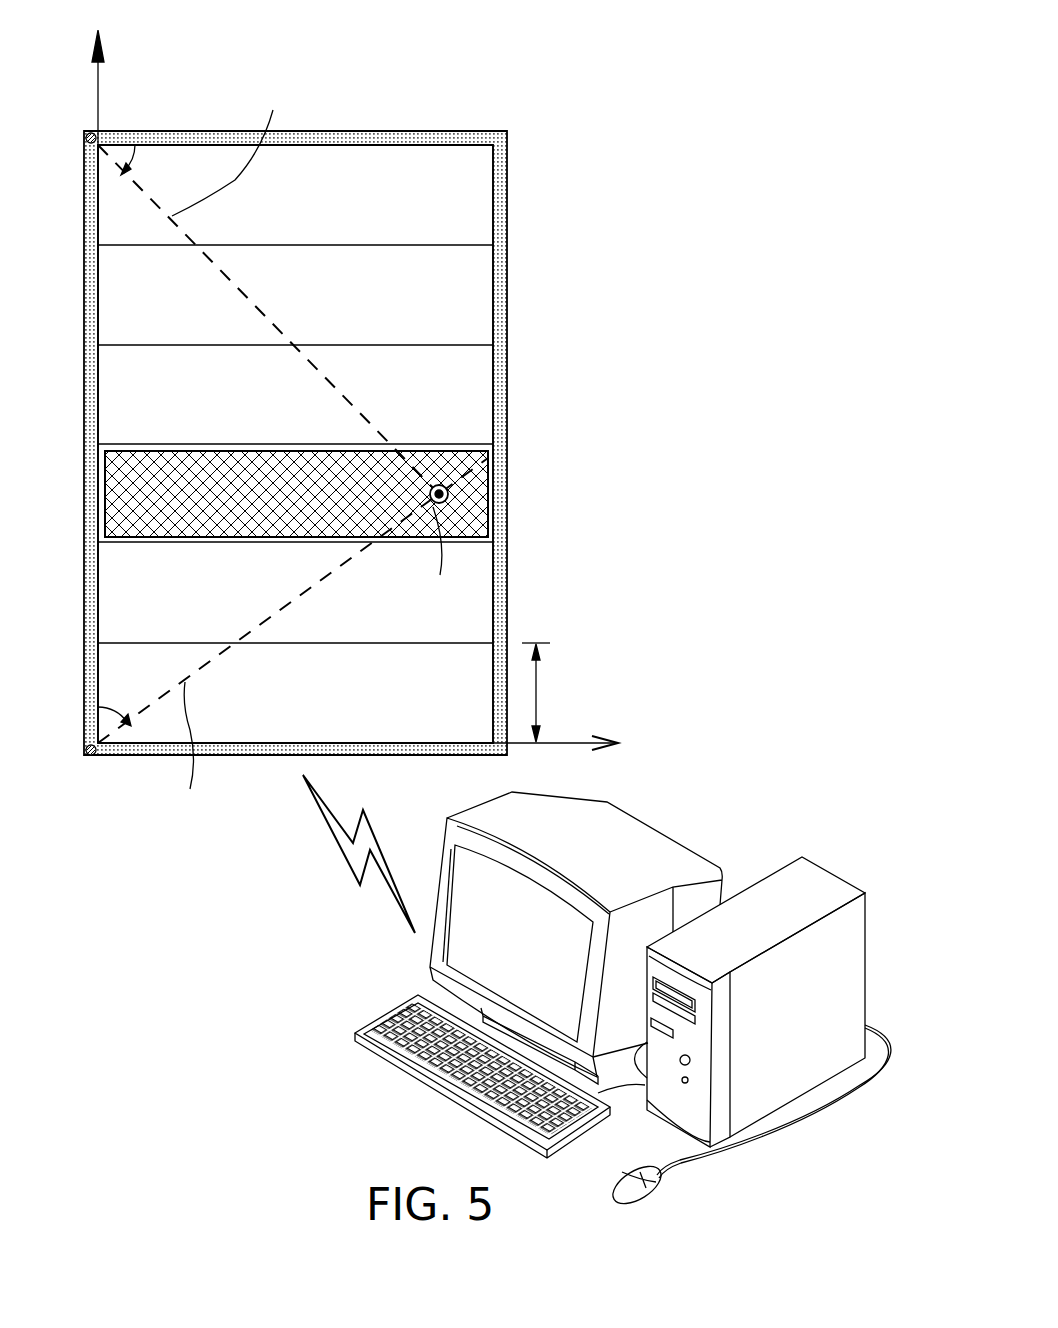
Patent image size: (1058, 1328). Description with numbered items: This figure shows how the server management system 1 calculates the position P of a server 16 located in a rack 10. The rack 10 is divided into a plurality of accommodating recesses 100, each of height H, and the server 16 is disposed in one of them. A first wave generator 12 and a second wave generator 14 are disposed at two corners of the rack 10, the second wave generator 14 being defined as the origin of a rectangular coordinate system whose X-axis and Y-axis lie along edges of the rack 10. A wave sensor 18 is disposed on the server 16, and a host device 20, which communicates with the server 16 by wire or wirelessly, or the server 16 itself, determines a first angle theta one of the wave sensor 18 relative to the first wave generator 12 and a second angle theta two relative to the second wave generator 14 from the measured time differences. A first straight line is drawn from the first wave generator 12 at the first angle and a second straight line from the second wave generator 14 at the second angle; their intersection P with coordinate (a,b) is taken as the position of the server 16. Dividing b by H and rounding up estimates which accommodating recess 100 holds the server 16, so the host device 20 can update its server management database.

The server management system 1 is at (680, 118).
The rack 10 is at (477, 130).
The accommodating recess 100 is at (465, 214).
The first wave generator 12 is at (91, 132).
The second wave generator 14 is at (95, 757).
The server 16 is at (452, 462).
The wave sensor 18 is at (452, 487).
The host device 20 is at (708, 795).